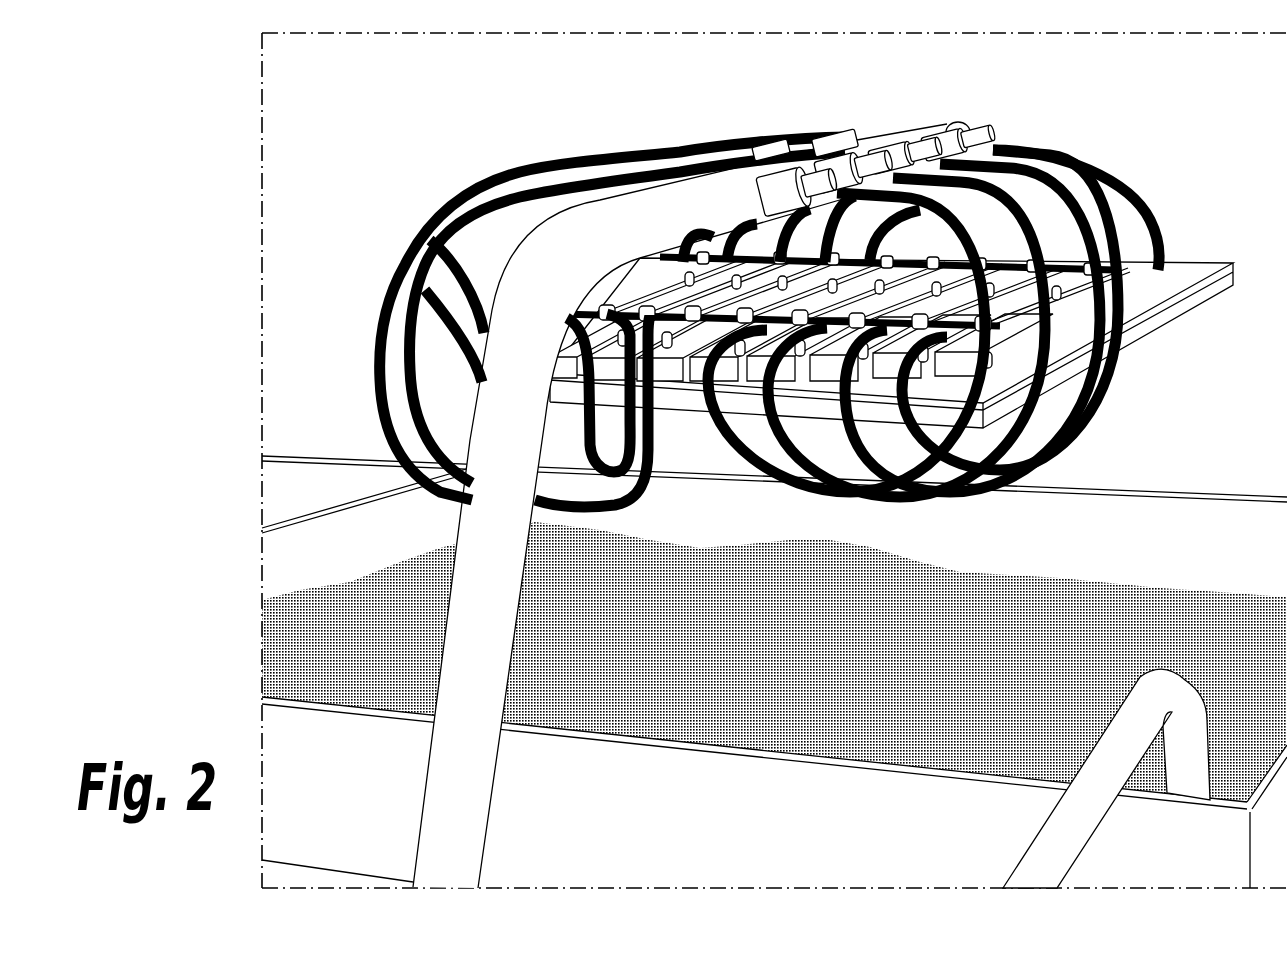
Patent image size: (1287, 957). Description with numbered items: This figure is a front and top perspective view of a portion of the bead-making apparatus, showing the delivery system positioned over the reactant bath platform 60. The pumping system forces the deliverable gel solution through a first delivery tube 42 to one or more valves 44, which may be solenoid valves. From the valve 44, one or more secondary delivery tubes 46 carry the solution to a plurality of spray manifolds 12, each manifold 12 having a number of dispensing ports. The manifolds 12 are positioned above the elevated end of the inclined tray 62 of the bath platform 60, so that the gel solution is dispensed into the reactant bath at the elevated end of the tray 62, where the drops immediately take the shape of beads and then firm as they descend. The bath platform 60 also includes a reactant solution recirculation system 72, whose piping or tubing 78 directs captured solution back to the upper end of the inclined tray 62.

The spray manifold 12 is at (1067, 308).
The first delivery tube 42 is at (497, 425).
The valve 44 is at (855, 127).
The secondary delivery tube 46 is at (1100, 160).
The reactant bath platform 60 is at (945, 652).
The inclined tray 62 is at (397, 537).
The reactant solution recirculation system 72 is at (1019, 778).
The piping or tubing 78 is at (1037, 842).